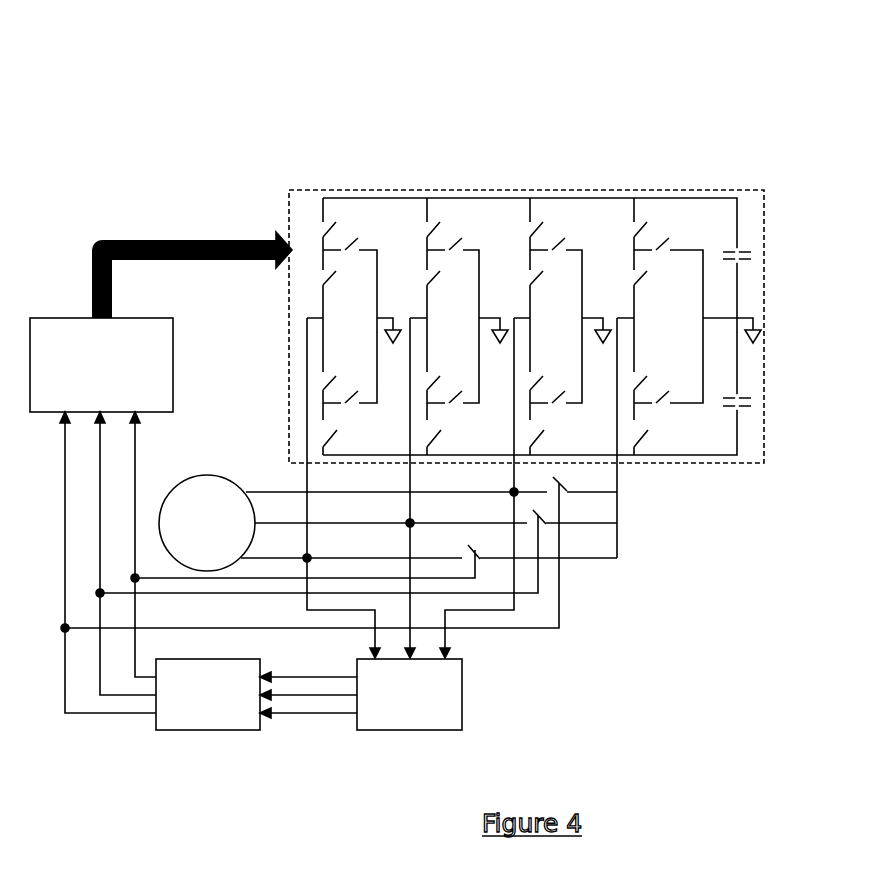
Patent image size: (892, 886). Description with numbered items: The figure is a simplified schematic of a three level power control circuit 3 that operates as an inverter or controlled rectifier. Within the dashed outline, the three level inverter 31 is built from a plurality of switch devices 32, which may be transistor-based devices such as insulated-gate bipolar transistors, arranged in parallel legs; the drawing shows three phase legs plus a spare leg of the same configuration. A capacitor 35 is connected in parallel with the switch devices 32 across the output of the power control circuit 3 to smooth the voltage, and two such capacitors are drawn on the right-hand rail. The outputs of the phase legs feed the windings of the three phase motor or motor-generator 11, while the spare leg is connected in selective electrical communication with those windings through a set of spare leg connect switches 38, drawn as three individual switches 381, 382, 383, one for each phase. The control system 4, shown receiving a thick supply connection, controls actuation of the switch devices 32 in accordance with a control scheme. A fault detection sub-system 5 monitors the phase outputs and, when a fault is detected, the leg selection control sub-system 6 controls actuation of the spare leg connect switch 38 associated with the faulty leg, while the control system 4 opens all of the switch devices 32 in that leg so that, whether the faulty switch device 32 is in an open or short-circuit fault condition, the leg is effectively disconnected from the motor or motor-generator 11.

The power control circuit 3 is at (603, 150).
The control system 4 is at (96, 378).
The fault detection sub-system 5 is at (418, 708).
The leg selection control sub-system 6 is at (211, 708).
The motor or motor-generator 11 is at (222, 536).
The inverter 31 is at (288, 189).
The switch device 32 is at (420, 224).
The capacitor 35 is at (752, 247).
The spare leg connect switch 38 is at (423, 549).
The spare leg connect switch 381 is at (472, 546).
The spare leg connect switch 382 is at (537, 512).
The spare leg connect switch 383 is at (562, 477).